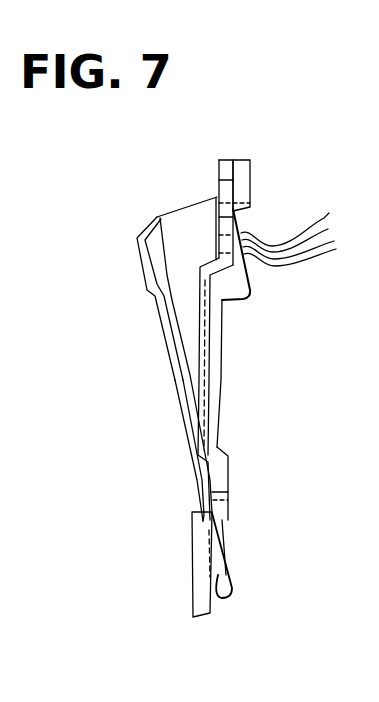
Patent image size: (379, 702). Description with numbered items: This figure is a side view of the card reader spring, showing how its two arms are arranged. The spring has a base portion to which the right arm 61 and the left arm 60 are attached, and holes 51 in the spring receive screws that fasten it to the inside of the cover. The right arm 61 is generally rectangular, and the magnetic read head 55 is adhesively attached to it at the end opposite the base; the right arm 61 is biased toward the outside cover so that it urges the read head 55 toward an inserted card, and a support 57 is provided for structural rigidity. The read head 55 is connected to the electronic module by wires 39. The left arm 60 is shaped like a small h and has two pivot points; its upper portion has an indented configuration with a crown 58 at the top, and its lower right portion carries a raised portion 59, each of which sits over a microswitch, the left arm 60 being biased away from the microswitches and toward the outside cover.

The wires 39 is at (278, 268).
The holes of spring 51 is at (255, 218).
The magnetic read head 55 is at (185, 228).
The support 57 is at (195, 311).
The crown 58 is at (143, 267).
The raised portion 59 is at (218, 592).
The left arm 60 is at (185, 416).
The right arm 61 is at (132, 346).